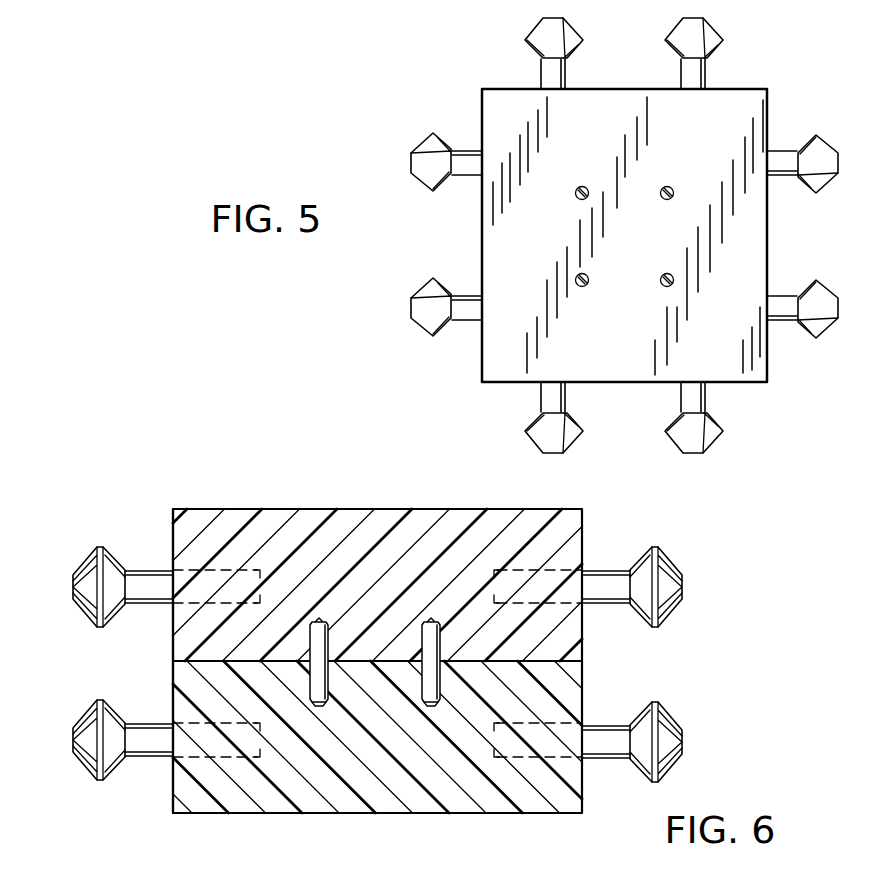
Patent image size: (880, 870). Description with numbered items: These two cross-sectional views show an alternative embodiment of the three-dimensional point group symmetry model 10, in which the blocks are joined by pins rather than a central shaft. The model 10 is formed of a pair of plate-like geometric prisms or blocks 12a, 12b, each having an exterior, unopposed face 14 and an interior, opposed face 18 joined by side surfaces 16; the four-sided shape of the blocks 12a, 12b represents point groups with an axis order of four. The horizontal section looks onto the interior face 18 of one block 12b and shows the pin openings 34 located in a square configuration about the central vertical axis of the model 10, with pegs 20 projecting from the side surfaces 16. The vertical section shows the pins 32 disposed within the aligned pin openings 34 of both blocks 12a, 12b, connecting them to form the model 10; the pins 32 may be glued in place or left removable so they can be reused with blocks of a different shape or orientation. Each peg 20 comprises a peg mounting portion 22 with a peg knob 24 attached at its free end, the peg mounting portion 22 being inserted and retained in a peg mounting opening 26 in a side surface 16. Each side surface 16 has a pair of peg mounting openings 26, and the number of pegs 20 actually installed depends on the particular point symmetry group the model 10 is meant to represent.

In FIG. 6, the point group symmetry model 10 is at (425, 613).
In FIG. 6, the block 12a is at (173, 509).
In FIG. 5, the block 12b is at (767, 89).
In FIG. 6, the block 12b is at (172, 813).
In FIG. 6, the exterior face 14 is at (443, 509).
In FIG. 6, the side surface 16 is at (173, 540).
In FIG. 5, the interior face 18 is at (500, 118).
In FIG. 6, the interior face 18 is at (175, 662).
In FIG. 5, the peg 20 is at (678, 38).
In FIG. 6, the peg 20 is at (425, 644).
In FIG. 6, the peg mounting portion 22 is at (602, 571).
In FIG. 6, the peg knob 24 is at (684, 585).
In FIG. 6, the peg mounting opening 26 is at (585, 608).
In FIG. 6, the pin 32 is at (432, 619).
In FIG. 5, the pin opening 34 is at (662, 196).
In FIG. 6, the pin opening 34 is at (432, 705).